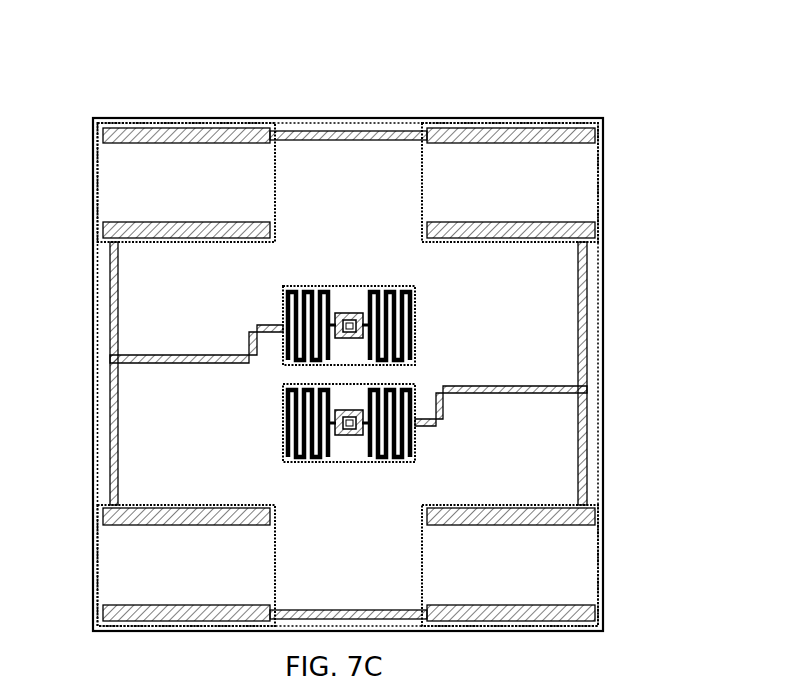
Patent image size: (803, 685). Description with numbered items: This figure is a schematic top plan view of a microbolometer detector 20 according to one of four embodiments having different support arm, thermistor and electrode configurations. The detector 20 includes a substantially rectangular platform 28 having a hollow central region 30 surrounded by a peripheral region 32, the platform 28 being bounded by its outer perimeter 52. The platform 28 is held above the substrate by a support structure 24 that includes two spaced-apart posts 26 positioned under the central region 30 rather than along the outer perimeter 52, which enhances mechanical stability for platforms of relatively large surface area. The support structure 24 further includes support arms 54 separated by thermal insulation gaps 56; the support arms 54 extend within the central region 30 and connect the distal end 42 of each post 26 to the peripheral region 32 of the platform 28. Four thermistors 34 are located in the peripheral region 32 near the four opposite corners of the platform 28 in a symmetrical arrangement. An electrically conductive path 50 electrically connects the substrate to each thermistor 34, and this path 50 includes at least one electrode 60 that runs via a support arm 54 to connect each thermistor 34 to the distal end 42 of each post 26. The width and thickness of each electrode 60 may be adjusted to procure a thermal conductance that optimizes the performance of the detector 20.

The microbolometer detector 20 is at (647, 90).
The support structure 24 is at (314, 423).
The post 26 is at (348, 311).
The platform 28 is at (364, 188).
The central region 30 is at (279, 375).
The peripheral region 32 is at (564, 303).
The thermistor 34 is at (116, 563).
The distal end 42 is at (356, 327).
The electrically conductive path 50 is at (540, 396).
The outer perimeter 52 is at (349, 117).
The support arm 54 is at (378, 306).
The thermal insulation gap 56 is at (293, 404).
The electrode 60 is at (141, 356).